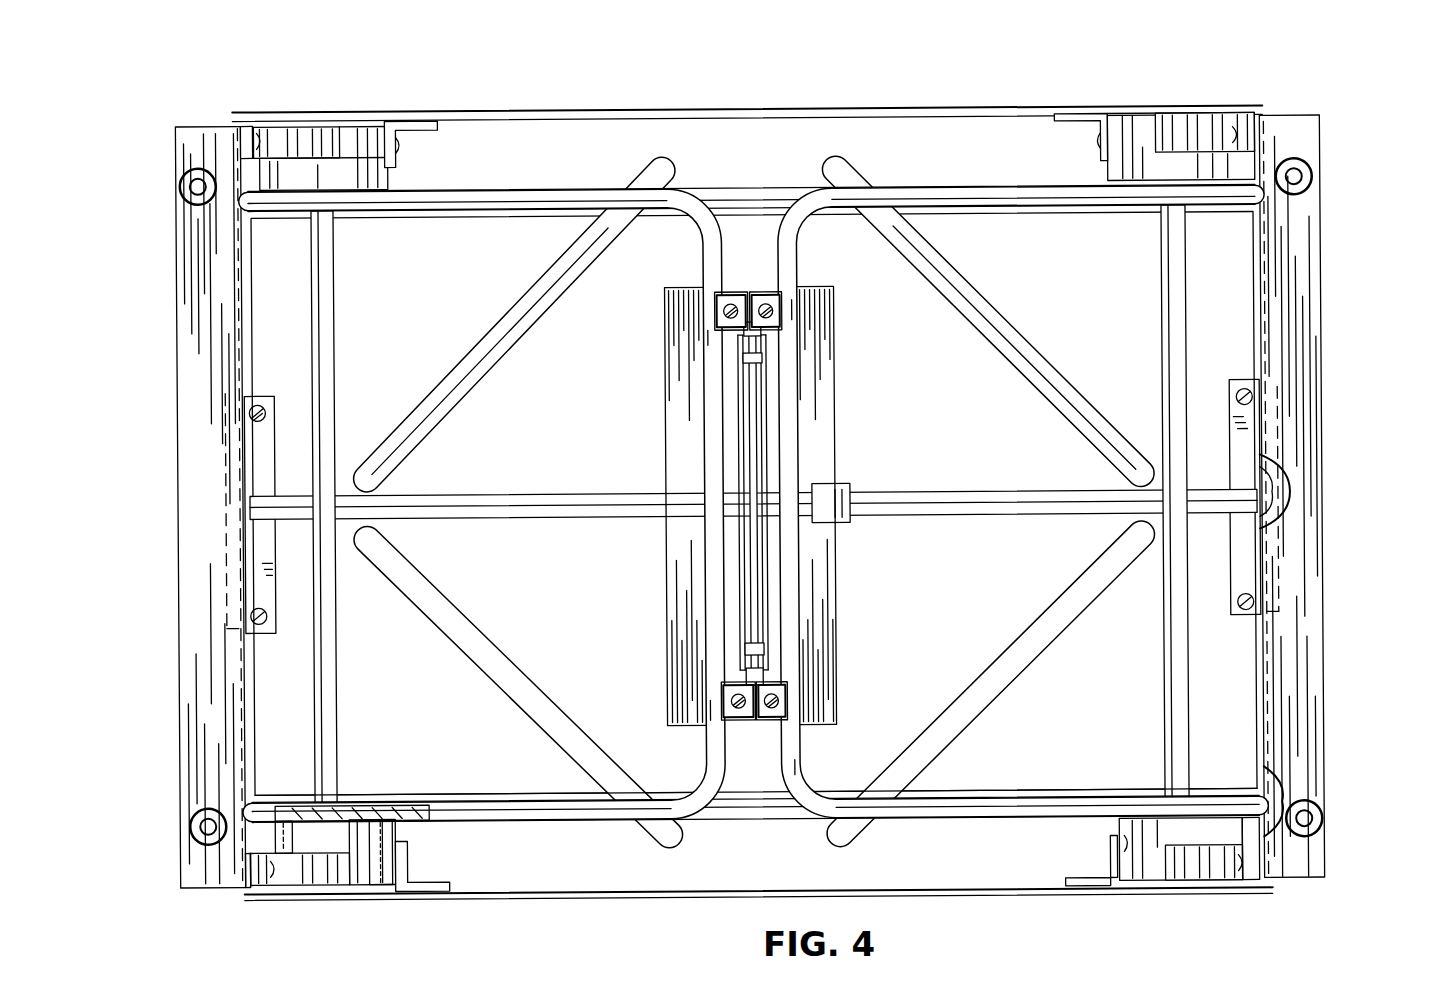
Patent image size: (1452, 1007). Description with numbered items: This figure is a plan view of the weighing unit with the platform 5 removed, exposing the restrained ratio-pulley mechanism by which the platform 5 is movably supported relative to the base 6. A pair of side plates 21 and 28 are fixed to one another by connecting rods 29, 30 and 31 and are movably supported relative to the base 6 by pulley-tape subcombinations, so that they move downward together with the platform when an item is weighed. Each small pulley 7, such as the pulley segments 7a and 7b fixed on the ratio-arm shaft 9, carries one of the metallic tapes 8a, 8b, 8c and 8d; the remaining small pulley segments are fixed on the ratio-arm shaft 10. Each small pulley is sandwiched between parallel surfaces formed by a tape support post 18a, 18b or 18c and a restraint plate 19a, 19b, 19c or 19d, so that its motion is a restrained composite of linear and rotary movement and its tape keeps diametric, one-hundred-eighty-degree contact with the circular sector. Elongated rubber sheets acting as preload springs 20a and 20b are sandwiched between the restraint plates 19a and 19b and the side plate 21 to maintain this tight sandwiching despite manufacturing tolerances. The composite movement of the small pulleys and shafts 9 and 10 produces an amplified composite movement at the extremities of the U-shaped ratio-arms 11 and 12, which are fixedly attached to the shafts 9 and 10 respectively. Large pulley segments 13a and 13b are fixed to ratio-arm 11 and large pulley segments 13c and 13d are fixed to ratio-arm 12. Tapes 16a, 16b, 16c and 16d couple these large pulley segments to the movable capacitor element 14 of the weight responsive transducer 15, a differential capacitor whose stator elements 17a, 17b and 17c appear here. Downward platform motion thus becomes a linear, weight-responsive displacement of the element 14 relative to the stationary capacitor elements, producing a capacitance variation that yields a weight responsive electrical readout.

The platform 5 is at (105, 897).
The base 6 is at (583, 898).
The pulley 7 is at (108, 515).
The small pulley segment 7a is at (360, 868).
The small pulley segment 7b is at (378, 135).
The metallic tape 8a is at (305, 868).
The metallic tape 8b is at (312, 137).
The metallic tape 8c is at (1205, 870).
The metallic tape 8d is at (1198, 128).
The ratio-arm shaft 9 is at (337, 720).
The ratio-arm shaft 10 is at (1182, 690).
The U-shaped ratio-arm 11 is at (490, 803).
The U-shaped ratio-arm 12 is at (1015, 808).
The large pulley segment 13a is at (722, 700).
The large pulley segment 13b is at (718, 300).
The large pulley segment 13c is at (782, 688).
The large pulley segment 13d is at (777, 300).
The movable capacitor element 14 is at (750, 430).
The weight responsive transducer 15 is at (853, 441).
The tape 16a is at (725, 716).
The tape 16b is at (720, 322).
The tape 16c is at (784, 708).
The tape 16d is at (782, 322).
The stator element 17a is at (745, 605).
The stator element 17b is at (1148, 865).
The stator element 17c is at (770, 600).
The tape support post 18a is at (405, 855).
The tape support post 18b is at (410, 152).
The tape support post 18c is at (1105, 848).
The restraint plate 19a is at (275, 868).
The restraint plate 19b is at (282, 140).
The restraint plate 19c is at (1252, 870).
The restraint plate 19d is at (1250, 135).
The rubber preload spring 20a is at (242, 868).
The rubber preload spring 20b is at (240, 125).
The side plate 21 is at (187, 323).
The side plate 28 is at (1315, 298).
The connecting rod 29 is at (516, 492).
The connecting rod 30 is at (728, 812).
The connecting rod 31 is at (760, 185).